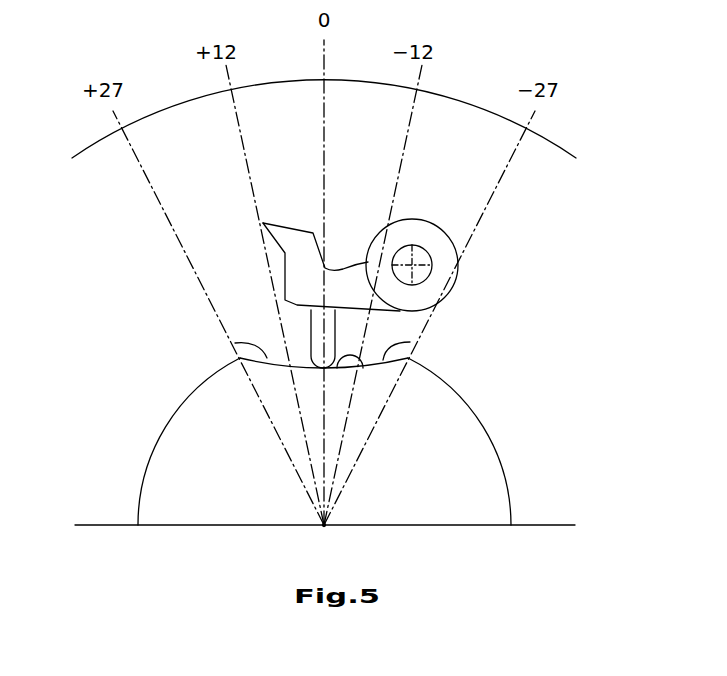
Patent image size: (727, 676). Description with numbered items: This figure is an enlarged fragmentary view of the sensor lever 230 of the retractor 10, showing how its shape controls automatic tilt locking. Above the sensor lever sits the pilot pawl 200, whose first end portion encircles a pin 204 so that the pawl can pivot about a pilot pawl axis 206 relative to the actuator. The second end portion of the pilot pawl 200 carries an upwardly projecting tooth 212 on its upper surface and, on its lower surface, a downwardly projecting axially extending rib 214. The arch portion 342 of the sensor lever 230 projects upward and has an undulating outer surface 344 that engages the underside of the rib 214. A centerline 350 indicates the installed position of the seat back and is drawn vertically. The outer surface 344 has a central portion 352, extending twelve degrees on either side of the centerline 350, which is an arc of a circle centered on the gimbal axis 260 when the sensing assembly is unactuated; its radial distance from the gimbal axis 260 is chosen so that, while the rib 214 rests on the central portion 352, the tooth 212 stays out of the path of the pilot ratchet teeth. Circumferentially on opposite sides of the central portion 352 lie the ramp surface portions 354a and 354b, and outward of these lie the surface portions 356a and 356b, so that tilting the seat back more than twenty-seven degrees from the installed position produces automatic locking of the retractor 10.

The retractor 10 is at (146, 226).
The pilot pawl 200 is at (477, 224).
The pin 204 is at (405, 246).
The pilot pawl axis 206 is at (412, 265).
The tooth 212 is at (265, 222).
The rib 214 is at (310, 331).
The sensor lever 230 is at (557, 487).
The gimbal axis 260 is at (324, 526).
The arch portion 342 is at (373, 419).
The outer surface 344 is at (513, 423).
The centerline 350 is at (326, 178).
The central portion 352 is at (365, 369).
The surface portion 354a is at (235, 343).
The surface portion 354b is at (410, 342).
The surface portion 356a is at (157, 440).
The surface portion 356b is at (450, 384).